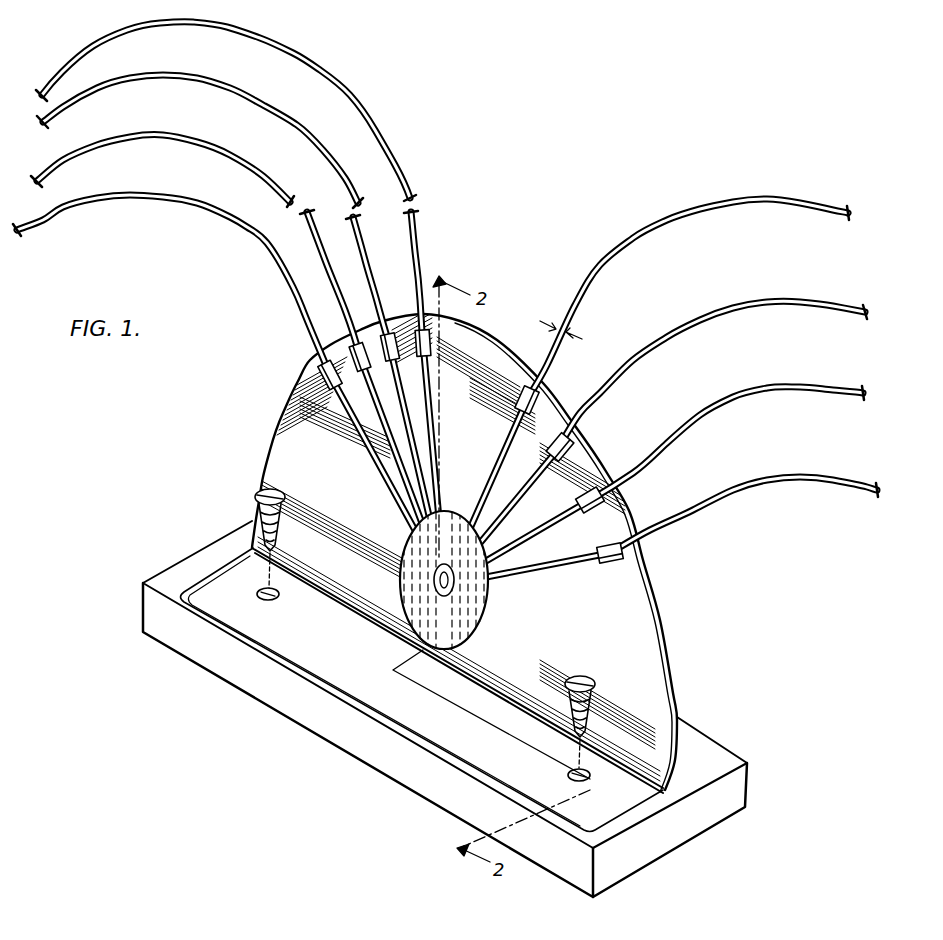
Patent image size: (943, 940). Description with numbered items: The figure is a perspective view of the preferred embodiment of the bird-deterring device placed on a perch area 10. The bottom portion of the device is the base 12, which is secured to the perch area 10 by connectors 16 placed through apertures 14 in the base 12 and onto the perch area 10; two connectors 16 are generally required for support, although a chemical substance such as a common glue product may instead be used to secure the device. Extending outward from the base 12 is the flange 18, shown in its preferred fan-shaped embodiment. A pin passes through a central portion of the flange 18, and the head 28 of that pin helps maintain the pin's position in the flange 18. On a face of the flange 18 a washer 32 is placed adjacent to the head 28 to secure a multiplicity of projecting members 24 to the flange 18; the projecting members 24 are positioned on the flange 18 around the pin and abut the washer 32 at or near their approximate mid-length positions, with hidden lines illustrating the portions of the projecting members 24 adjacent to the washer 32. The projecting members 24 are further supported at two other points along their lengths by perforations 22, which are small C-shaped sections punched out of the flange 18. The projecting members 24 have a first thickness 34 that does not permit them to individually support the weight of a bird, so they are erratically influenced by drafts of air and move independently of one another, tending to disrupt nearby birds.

The perch area 10 is at (722, 748).
The base 12 is at (237, 562).
The apertures 14 is at (258, 595).
The connectors 16 is at (264, 495).
The flange 18 is at (290, 419).
The perforations 22 is at (345, 387).
The projecting members 24 is at (323, 249).
The head 28 is at (438, 588).
The washer 32 is at (482, 530).
The first thickness 34 is at (560, 331).